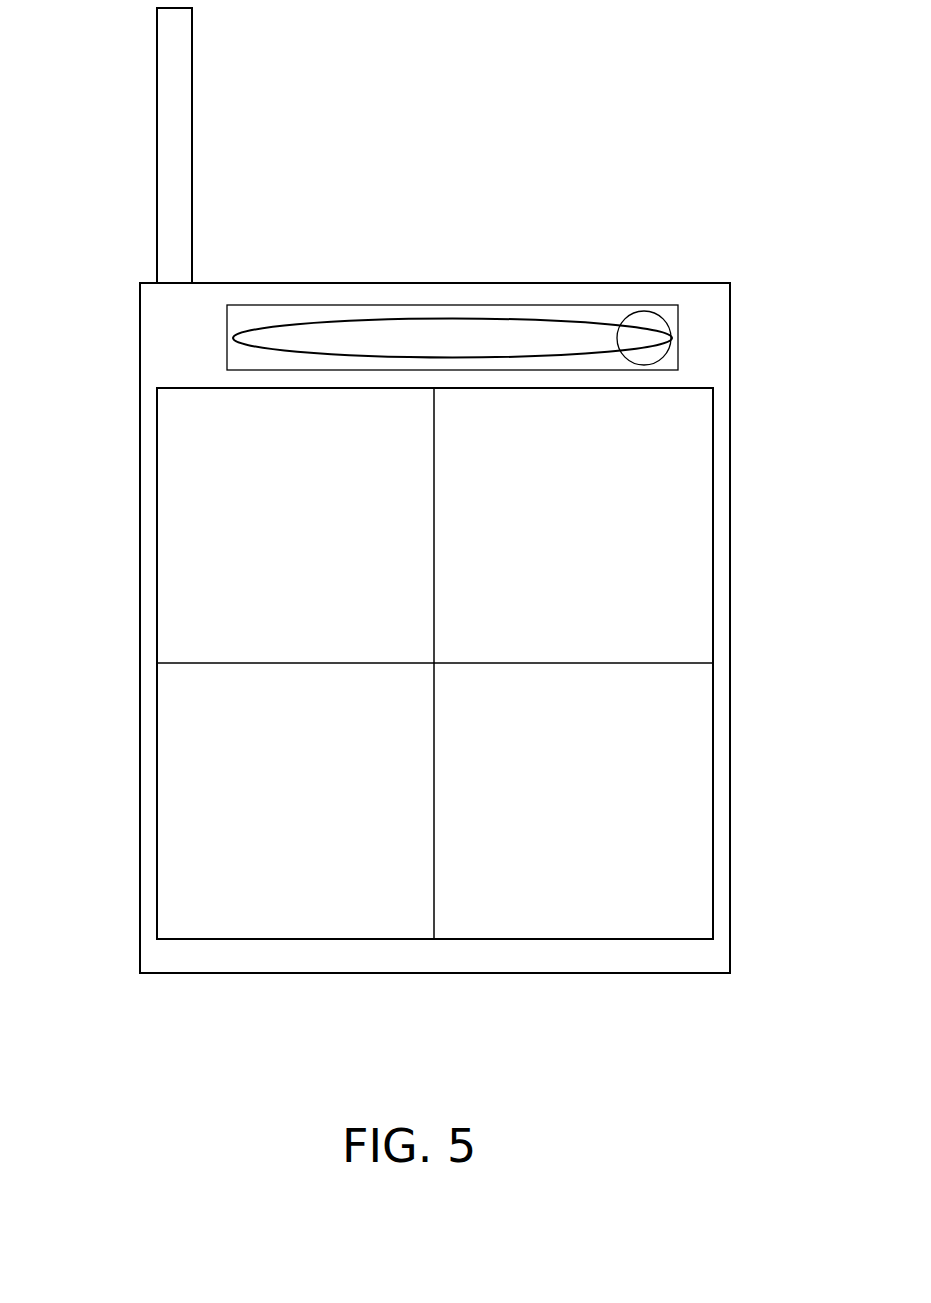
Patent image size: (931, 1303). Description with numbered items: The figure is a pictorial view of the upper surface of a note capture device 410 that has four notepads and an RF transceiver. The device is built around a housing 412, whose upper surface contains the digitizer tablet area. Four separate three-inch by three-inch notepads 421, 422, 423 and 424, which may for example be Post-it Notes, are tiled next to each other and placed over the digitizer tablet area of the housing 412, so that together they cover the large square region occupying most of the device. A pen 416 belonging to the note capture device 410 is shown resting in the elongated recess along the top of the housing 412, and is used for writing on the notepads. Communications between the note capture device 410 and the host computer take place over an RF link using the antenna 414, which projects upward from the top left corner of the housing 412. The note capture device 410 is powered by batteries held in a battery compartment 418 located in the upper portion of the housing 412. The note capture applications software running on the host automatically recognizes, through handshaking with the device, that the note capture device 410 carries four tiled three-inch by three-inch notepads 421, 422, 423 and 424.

The note capture device 410 is at (97, 248).
The housing 412 is at (139, 532).
The antenna 414 is at (193, 67).
The pen 416 is at (333, 320).
The battery compartment 418 is at (538, 283).
The notepad 421 is at (175, 628).
The notepad 422 is at (175, 731).
The notepad 423 is at (693, 629).
The notepad 424 is at (693, 733).